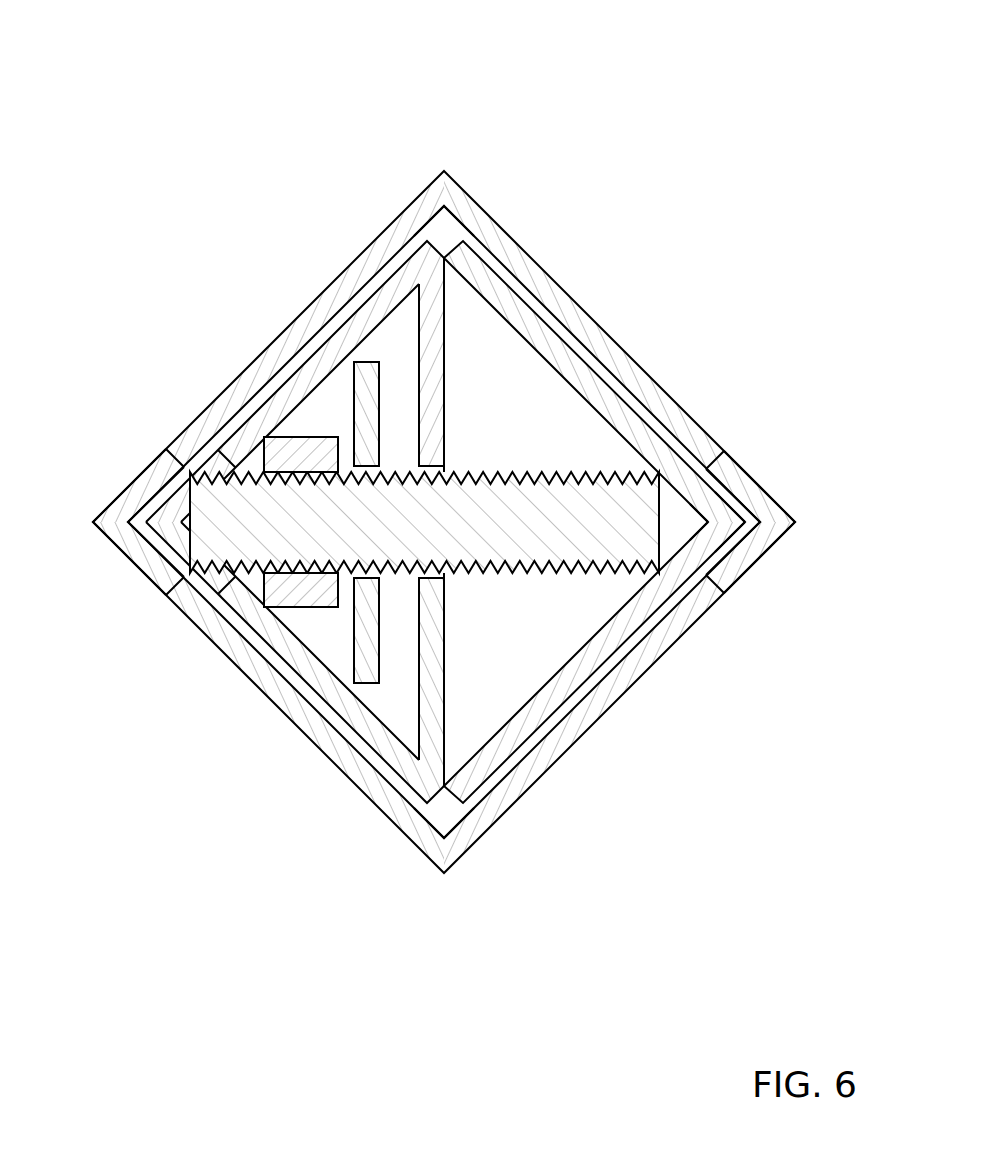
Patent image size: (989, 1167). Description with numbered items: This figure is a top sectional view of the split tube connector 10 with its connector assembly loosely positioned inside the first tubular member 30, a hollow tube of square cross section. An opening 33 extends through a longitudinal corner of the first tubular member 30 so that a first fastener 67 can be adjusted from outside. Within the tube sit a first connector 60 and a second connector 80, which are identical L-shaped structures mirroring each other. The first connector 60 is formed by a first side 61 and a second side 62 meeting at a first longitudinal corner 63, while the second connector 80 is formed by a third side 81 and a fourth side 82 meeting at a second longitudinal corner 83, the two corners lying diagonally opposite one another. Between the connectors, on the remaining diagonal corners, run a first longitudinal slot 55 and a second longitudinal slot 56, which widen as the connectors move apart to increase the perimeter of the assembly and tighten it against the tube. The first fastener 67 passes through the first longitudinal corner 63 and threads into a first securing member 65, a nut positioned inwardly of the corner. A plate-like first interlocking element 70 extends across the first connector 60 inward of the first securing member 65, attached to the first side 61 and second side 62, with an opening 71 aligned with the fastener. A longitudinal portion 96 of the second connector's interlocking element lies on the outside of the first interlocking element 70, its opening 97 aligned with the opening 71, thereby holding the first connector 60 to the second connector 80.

The split tube connector 10 is at (185, 110).
The first tubular member 30 is at (558, 283).
The opening 33 is at (755, 493).
The first longitudinal slot 55 is at (444, 237).
The second longitudinal slot 56 is at (444, 820).
The first connector 60 is at (262, 632).
The first side 61 is at (293, 387).
The second side 62 is at (330, 703).
The first longitudinal corner 63 is at (162, 527).
The first securing member 65 is at (352, 467).
The first fastener 67 is at (188, 499).
The first interlocking element 70 is at (420, 367).
The opening 71 is at (440, 468).
The second connector 80 is at (647, 435).
The third side 81 is at (572, 680).
The fourth side 82 is at (607, 397).
The second longitudinal corner 83 is at (727, 525).
The longitudinal portion 96 is at (353, 393).
The opening 97 is at (300, 436).